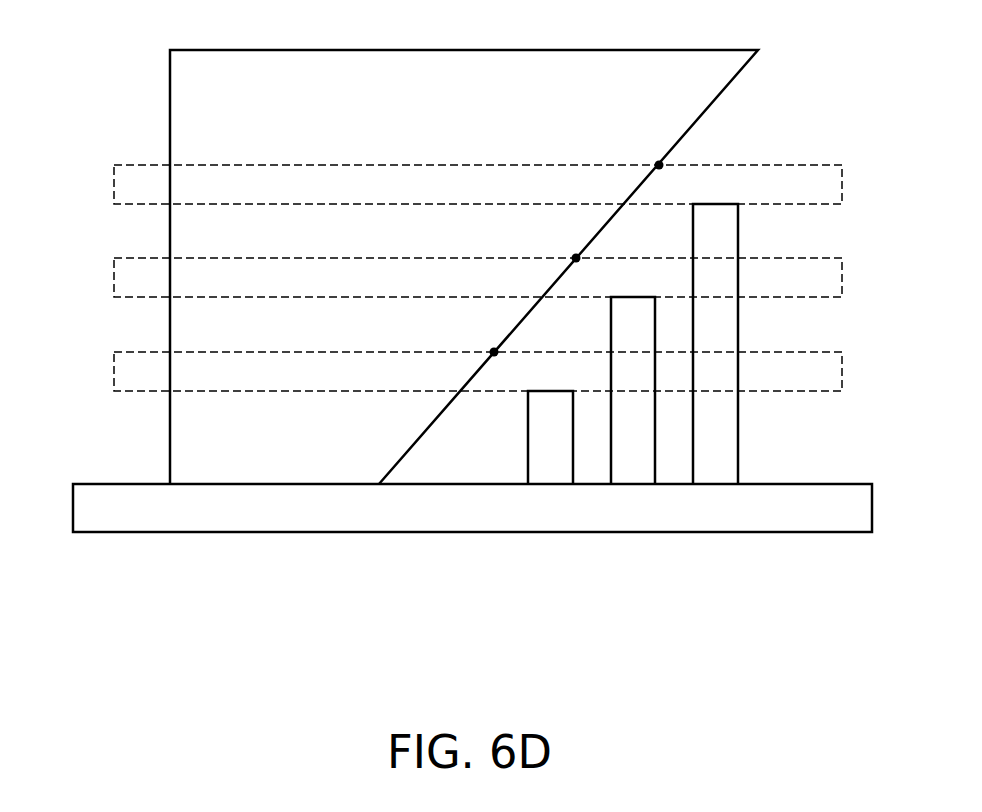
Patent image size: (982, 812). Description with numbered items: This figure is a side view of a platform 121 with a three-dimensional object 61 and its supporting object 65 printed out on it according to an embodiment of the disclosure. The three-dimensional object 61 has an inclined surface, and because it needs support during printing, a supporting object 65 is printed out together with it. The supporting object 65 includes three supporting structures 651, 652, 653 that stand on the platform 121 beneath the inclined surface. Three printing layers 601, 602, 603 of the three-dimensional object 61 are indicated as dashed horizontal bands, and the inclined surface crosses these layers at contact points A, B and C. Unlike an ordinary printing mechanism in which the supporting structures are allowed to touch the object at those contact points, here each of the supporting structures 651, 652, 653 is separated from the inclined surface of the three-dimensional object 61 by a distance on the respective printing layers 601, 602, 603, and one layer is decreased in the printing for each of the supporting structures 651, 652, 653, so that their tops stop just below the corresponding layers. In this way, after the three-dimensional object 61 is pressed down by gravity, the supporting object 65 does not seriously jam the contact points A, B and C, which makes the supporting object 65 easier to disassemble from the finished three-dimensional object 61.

The 3-D object 61 is at (580, 50).
The platform 121 is at (798, 515).
The printing layer 601 is at (114, 367).
The printing layer 602 is at (114, 273).
The printing layer 603 is at (114, 181).
The supporting object 65 is at (635, 425).
The supporting structure 651 is at (552, 467).
The supporting structure 652 is at (634, 467).
The supporting structure 653 is at (717, 400).